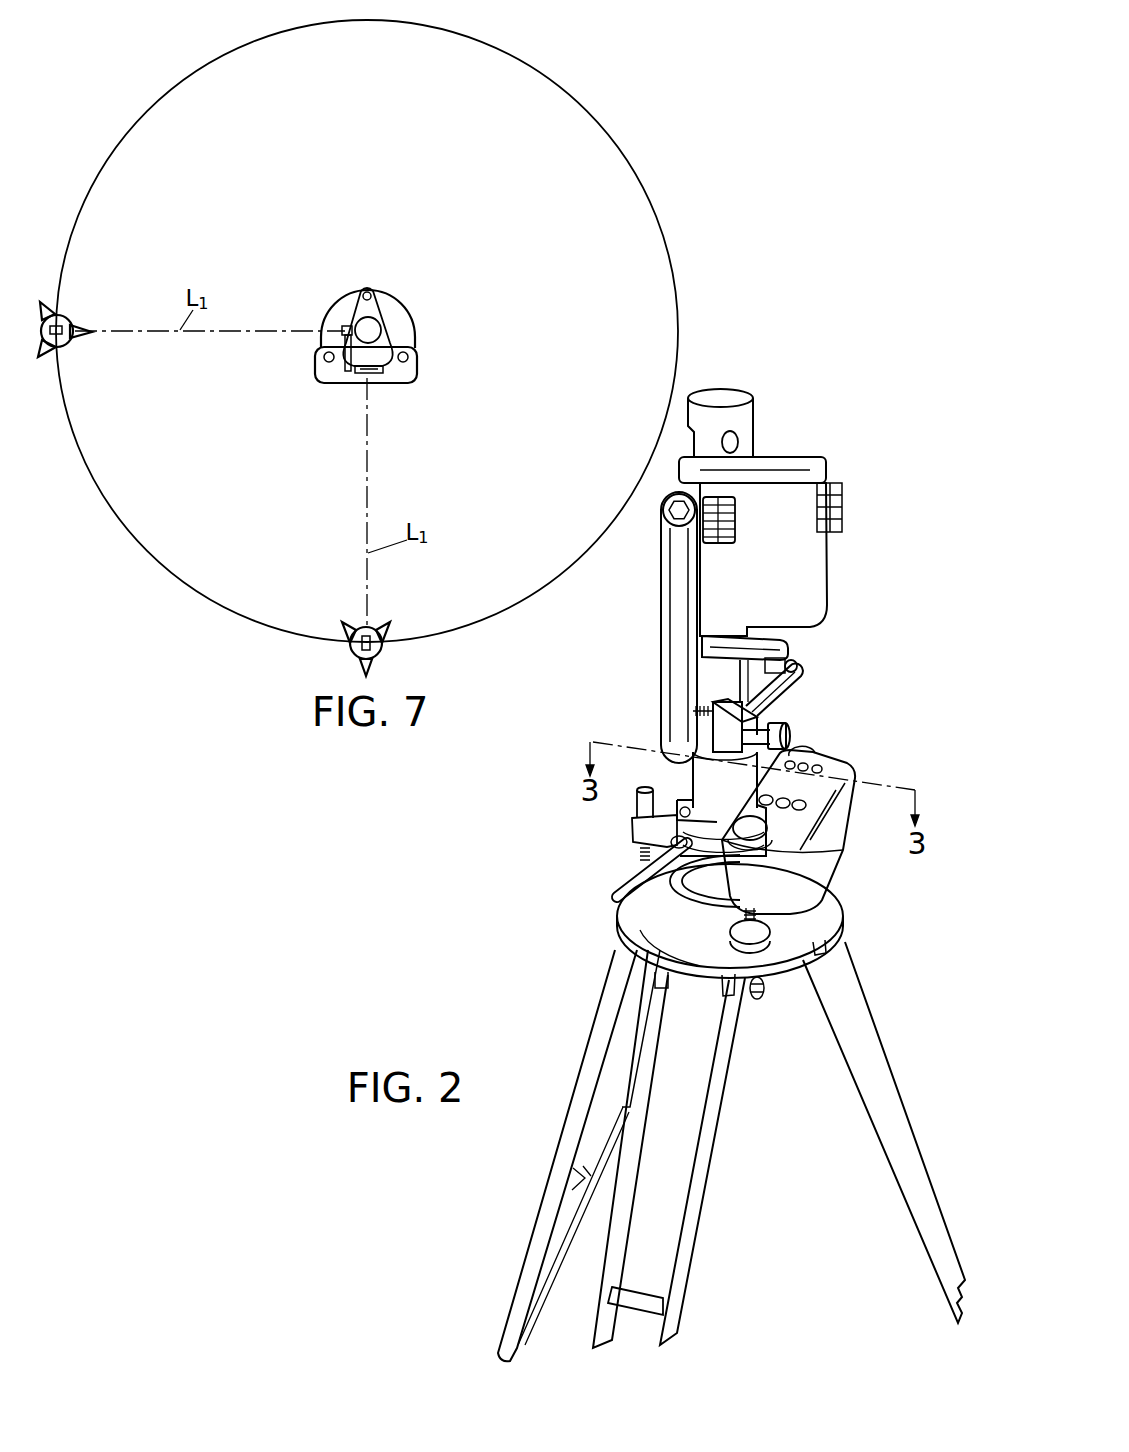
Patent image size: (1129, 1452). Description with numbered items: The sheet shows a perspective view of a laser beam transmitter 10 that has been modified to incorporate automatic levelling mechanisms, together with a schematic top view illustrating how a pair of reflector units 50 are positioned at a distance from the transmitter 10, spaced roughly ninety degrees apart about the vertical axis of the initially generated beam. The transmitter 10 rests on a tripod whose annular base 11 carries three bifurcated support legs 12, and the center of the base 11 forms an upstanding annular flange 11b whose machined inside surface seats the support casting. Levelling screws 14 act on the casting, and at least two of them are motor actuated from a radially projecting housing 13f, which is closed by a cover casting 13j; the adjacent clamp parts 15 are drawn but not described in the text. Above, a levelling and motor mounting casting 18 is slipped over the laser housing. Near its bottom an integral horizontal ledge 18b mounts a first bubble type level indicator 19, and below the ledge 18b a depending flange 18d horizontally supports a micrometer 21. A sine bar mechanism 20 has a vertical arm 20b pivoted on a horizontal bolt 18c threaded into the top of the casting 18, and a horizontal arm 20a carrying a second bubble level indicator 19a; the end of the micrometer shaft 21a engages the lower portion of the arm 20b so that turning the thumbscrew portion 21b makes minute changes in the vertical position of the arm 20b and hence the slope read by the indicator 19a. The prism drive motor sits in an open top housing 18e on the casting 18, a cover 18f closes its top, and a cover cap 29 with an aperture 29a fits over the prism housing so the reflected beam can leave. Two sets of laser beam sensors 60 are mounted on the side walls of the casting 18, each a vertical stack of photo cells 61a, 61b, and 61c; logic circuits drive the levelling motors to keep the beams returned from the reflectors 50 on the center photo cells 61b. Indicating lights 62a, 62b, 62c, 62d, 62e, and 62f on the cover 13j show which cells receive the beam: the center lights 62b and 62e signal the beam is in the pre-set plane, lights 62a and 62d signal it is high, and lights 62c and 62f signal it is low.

In FIG. 7, the laser beam transmitter 10 is at (412, 298).
In FIG. 7, the reflector unit 50 is at (62, 327).
In FIG. 7, the laser beam sensor 60 is at (349, 330).
In FIG. 2, the laser beam sensor 60 is at (842, 474).
In FIG. 2, the annular base 11 is at (642, 908).
In FIG. 2, the upstanding annular flange 11b is at (688, 912).
In FIG. 2, the bifurcated support legs 12 is at (624, 1163).
In FIG. 2, the radially projecting housing 13f is at (797, 891).
In FIG. 2, the cover casting 13j is at (828, 802).
In FIG. 2, the levelling screw 14 is at (640, 850).
In FIG. 2, the clamp lever 15 is at (648, 866).
In FIG. 2, the levelling and motor mounting casting 18 is at (710, 582).
In FIG. 2, the horizontal ledge 18b is at (783, 693).
In FIG. 2, the horizontal bolt 18c is at (675, 515).
In FIG. 2, the depending flange 18d is at (694, 712).
In FIG. 2, the open top motor housing 18e is at (795, 595).
In FIG. 2, the cover 18f is at (775, 462).
In FIG. 2, the first bubble type level indicator 19 is at (797, 669).
In FIG. 2, the second bubble level indicator 19a is at (722, 640).
In FIG. 2, the sine bar mechanism 20 is at (652, 647).
In FIG. 2, the horizontal arm 20a is at (745, 658).
In FIG. 2, the vertical arm 20b is at (662, 568).
In FIG. 2, the micrometer 21 is at (741, 762).
In FIG. 2, the micrometer shaft 21a is at (712, 732).
In FIG. 2, the thumbscrew portion 21b is at (782, 731).
In FIG. 2, the cover cap 29 is at (722, 393).
In FIG. 2, the aperture 29a is at (738, 437).
In FIG. 2, the laser beam photo cell 61a is at (716, 538).
In FIG. 2, the center laser beam photo cell 61b is at (722, 534).
In FIG. 2, the laser beam photo cell 61c is at (724, 507).
In FIG. 2, the indicating light 62a is at (771, 804).
In FIG. 2, the center indicating light 62b is at (788, 807).
In FIG. 2, the indicating light 62c is at (805, 809).
In FIG. 2, the indicating light 62d is at (812, 758).
In FIG. 2, the center indicating light 62e is at (820, 761).
In FIG. 2, the indicating light 62f is at (823, 769).